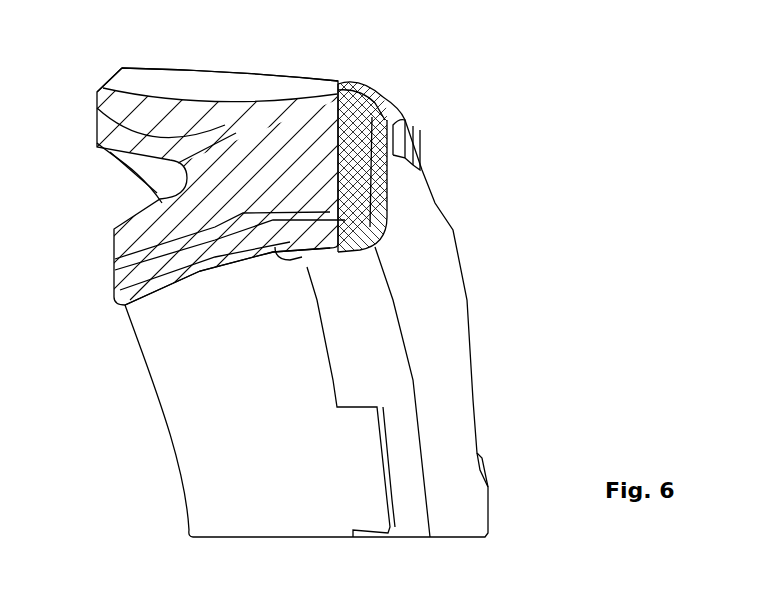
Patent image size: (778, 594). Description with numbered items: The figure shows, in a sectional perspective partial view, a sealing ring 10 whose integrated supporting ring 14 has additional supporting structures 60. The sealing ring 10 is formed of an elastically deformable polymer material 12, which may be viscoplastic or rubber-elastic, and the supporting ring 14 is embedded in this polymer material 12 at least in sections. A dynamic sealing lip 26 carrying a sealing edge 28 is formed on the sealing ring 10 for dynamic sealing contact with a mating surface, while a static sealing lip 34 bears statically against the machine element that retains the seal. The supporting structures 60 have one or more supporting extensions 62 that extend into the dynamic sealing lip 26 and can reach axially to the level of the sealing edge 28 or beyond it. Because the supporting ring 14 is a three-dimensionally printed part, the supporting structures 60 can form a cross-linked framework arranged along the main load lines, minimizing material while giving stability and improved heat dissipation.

The sealing ring 10 is at (497, 117).
The polymer material 12 is at (100, 105).
The supporting ring 14 is at (422, 262).
The dynamic sealing lip 26 is at (114, 277).
The sealing edge 28 is at (131, 299).
The static sealing lip 34 is at (110, 84).
The supporting structures 60 is at (300, 173).
The supporting extensions 62 is at (374, 84).